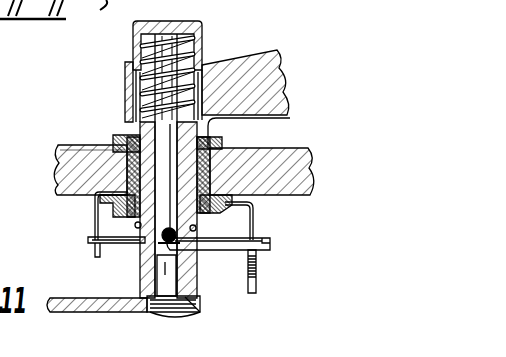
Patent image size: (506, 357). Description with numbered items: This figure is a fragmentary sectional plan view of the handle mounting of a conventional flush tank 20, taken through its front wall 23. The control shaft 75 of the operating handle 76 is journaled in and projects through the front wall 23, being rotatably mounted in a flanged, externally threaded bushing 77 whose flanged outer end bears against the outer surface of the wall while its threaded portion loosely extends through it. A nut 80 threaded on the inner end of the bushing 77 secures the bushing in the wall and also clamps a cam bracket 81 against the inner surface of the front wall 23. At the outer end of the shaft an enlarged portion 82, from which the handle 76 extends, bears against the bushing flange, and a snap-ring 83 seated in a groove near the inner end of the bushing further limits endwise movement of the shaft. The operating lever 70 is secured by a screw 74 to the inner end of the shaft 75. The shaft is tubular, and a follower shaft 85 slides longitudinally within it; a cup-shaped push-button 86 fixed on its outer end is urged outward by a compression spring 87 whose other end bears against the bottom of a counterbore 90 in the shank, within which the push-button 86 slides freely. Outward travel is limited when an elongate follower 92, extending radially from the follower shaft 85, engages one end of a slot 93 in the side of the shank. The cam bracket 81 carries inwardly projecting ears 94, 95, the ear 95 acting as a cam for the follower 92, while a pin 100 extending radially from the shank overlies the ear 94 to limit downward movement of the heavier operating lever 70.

The flush tank 20 is at (297, 148).
The front wall 23 is at (72, 150).
The operating lever 70 is at (58, 307).
The screw 74 is at (180, 318).
The control shaft 75 is at (143, 267).
The operating handle 76 is at (263, 57).
The bushing 77 is at (126, 172).
The nut 80 is at (256, 220).
The cam bracket 81 is at (223, 193).
The enlarged portion 82 is at (126, 127).
The snap-ring 83 is at (134, 226).
The follower shaft 85 is at (212, 128).
The push-button 86 is at (200, 22).
The compression spring 87 is at (141, 78).
The counterbore 90 is at (203, 92).
The follower 92 is at (272, 244).
The slot 93 is at (187, 273).
The ear 94 is at (95, 218).
The ear 95 is at (256, 288).
The pin 100 is at (88, 241).